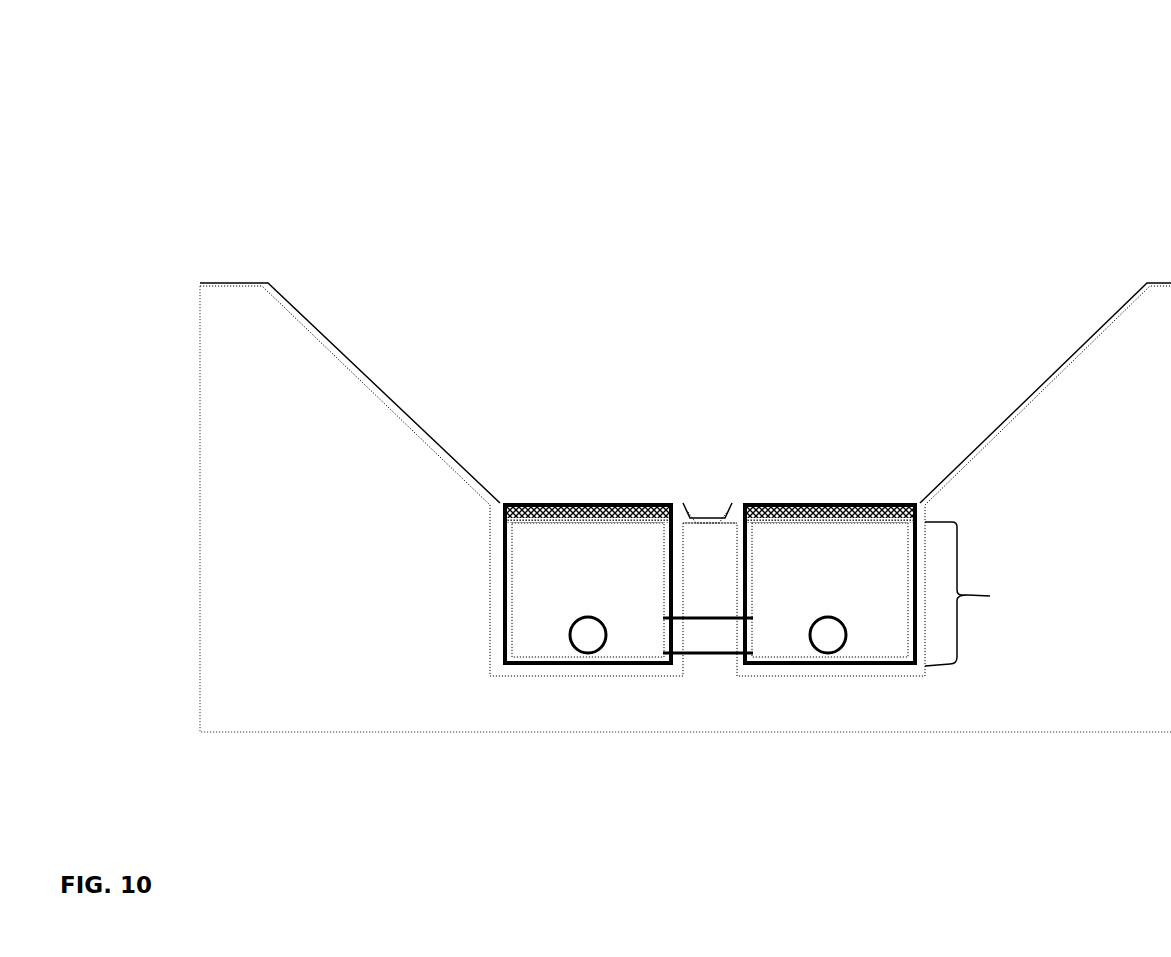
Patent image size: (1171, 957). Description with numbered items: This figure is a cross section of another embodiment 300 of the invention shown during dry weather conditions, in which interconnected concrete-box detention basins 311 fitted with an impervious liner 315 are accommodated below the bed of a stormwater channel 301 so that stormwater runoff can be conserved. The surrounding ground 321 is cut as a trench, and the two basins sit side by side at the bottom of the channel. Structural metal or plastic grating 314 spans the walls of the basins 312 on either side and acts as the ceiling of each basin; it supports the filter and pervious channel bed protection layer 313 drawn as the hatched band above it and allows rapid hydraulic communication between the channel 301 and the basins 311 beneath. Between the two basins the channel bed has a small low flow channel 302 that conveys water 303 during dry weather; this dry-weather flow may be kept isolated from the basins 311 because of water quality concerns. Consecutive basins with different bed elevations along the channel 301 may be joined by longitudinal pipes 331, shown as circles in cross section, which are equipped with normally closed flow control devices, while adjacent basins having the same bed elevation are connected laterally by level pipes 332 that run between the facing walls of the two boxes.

The embodiment 300 is at (183, 118).
The stormwater channel 301 is at (320, 338).
The low flow channel 302 is at (730, 503).
The water 303 is at (694, 503).
The concrete-box detention basins 311 is at (636, 805).
The walls of the basins 312 is at (662, 612).
The filter and pervious channel bed protection layer 313 is at (553, 503).
The structural metal or plastic grating 314 is at (558, 525).
The impervious liner 315 is at (505, 660).
The substrate 321 is at (265, 553).
The longitudinal pipes 331 is at (572, 648).
The level pipes 332 is at (720, 655).